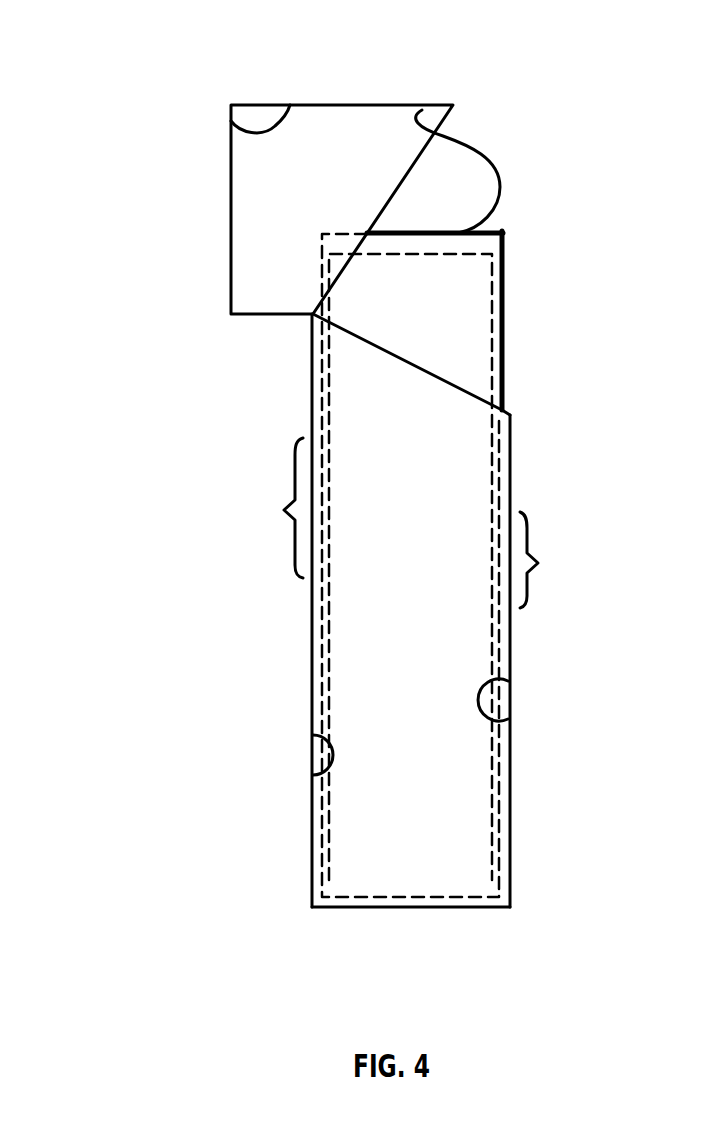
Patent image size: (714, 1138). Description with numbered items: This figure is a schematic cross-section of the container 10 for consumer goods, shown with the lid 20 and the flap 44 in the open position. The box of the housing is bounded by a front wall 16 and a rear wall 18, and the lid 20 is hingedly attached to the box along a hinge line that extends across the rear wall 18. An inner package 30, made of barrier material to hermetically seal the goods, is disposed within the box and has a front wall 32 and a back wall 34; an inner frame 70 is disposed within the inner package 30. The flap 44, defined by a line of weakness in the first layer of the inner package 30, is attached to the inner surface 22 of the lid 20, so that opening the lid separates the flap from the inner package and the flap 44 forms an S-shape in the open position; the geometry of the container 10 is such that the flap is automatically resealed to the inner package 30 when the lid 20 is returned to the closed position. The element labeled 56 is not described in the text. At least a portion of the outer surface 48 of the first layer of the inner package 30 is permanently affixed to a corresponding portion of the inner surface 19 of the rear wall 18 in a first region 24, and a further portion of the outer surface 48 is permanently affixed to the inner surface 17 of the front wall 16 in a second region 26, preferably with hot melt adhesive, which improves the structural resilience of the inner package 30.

The container 10 is at (350, 60).
The lid 20 is at (176, 201).
The inner surface of the lid 22 is at (231, 121).
The flap 44 is at (489, 148).
The top edge 56 is at (496, 225).
The inner frame 70 is at (504, 283).
The inner package 30 is at (504, 343).
The front wall 32 is at (504, 389).
The back wall 34 is at (322, 398).
The first region 24 is at (275, 508).
The outer surface of the first layer 48 is at (497, 488).
The second region 26 is at (547, 560).
The inner surface of the front wall 17 is at (508, 719).
The front wall 16 is at (511, 800).
The inner surface of the rear wall 19 is at (313, 775).
The rear wall 18 is at (312, 822).